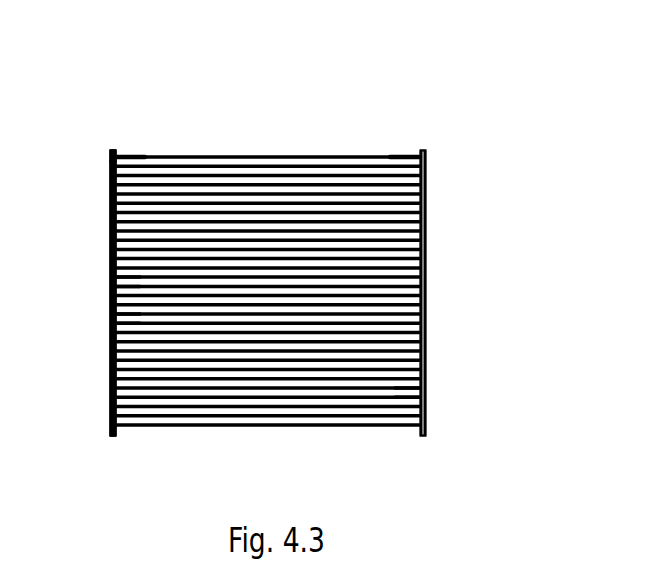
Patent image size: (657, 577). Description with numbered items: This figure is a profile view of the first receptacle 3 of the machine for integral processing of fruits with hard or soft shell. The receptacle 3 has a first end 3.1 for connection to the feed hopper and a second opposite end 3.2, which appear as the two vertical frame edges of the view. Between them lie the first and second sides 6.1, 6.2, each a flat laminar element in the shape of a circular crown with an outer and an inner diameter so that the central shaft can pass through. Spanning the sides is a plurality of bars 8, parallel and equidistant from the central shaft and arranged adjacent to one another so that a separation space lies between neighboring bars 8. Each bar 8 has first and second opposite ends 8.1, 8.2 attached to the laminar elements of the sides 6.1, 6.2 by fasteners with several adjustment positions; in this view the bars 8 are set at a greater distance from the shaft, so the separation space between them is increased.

The first receptacle 3 is at (262, 97).
The first end 3.1 is at (111, 436).
The second opposite end 3.2 is at (113, 149).
The first side 6.1 is at (117, 152).
The second side 6.2 is at (419, 153).
The bars 8 is at (190, 393).
The first end of bar 8.1 is at (390, 390).
The second end of bar 8.2 is at (122, 320).